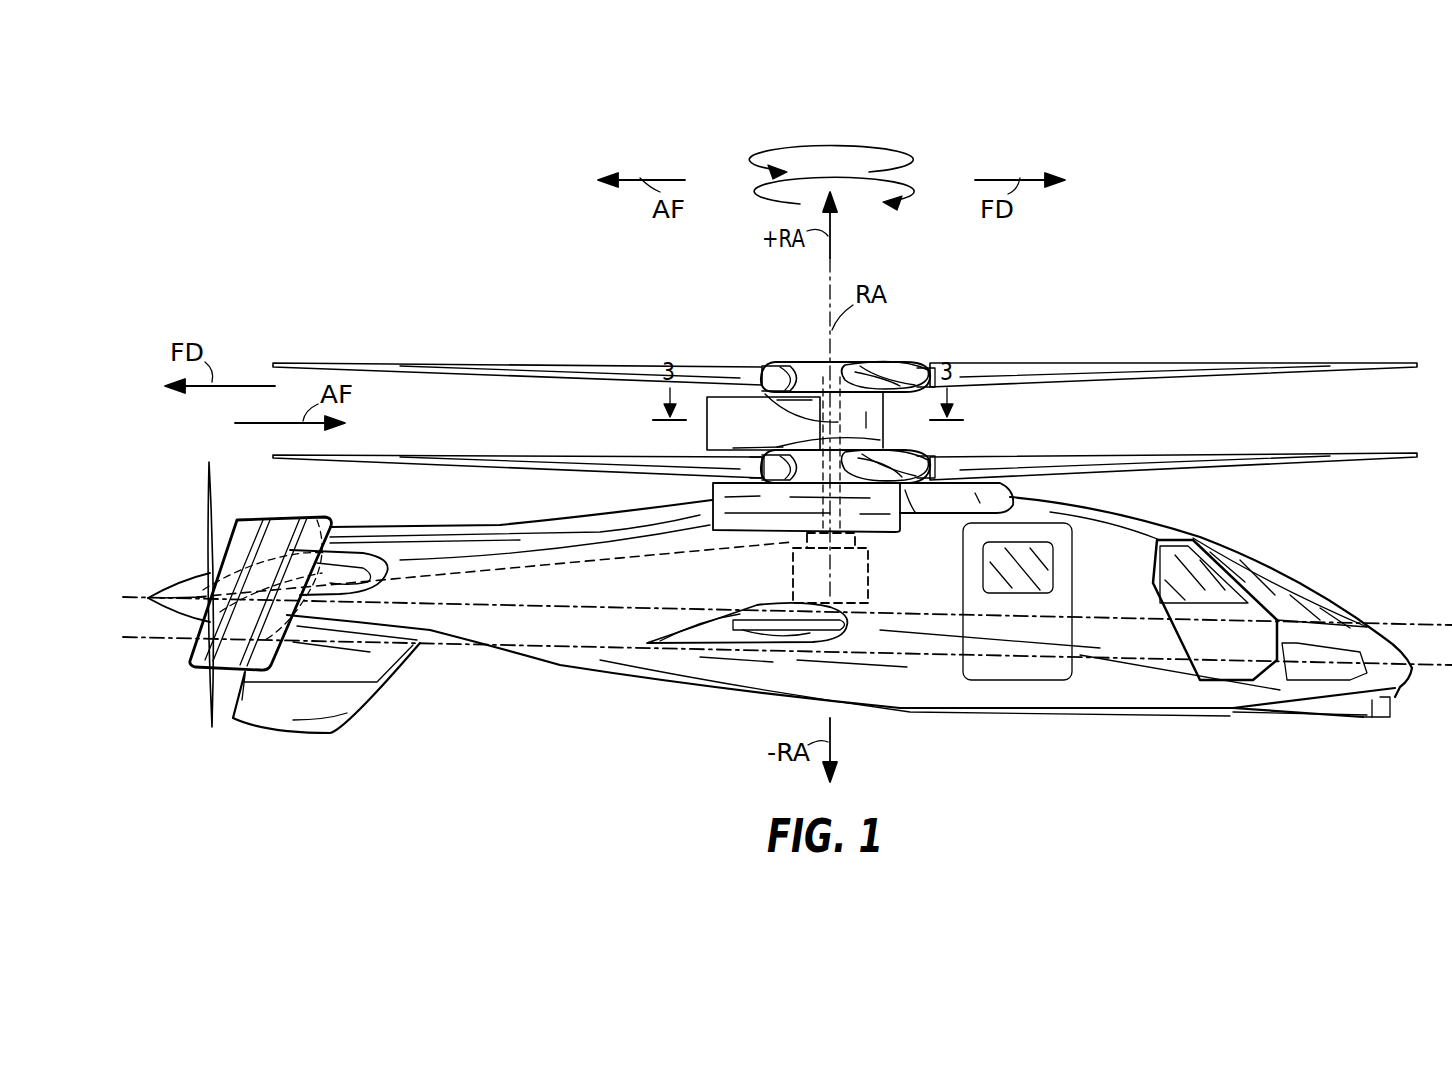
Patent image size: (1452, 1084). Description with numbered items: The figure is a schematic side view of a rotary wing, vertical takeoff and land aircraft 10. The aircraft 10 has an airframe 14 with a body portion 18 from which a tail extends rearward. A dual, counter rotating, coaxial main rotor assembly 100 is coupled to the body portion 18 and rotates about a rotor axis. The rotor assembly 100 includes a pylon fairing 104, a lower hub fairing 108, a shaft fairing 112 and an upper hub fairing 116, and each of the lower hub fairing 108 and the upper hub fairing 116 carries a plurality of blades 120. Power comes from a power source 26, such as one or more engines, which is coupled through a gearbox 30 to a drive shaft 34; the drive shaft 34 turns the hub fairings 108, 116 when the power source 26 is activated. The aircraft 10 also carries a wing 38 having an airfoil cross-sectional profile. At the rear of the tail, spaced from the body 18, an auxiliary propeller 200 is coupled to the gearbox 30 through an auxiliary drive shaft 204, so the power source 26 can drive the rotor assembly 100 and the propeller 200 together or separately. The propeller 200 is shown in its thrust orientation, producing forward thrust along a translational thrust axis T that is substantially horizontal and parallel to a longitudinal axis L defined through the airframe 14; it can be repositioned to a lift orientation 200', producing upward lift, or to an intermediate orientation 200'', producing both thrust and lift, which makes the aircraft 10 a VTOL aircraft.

The aircraft 10 is at (496, 210).
The airframe 14 is at (1057, 712).
The body portion 18 is at (523, 665).
The power source 26 is at (878, 548).
The gearbox 30 is at (905, 548).
The drive shaft 34 is at (768, 392).
The wing 38 is at (693, 628).
The main rotor assembly 100 is at (910, 325).
The pylon fairing 104 is at (712, 523).
The lower hub fairing 108 is at (895, 440).
The shaft fairing 112 is at (707, 440).
The upper hub fairing 116 is at (822, 352).
The blades 120 is at (410, 366).
The auxiliary propeller 200 is at (178, 591).
The auxiliary propeller in lift orientation 200' is at (231, 593).
The auxiliary propeller in intermediate orientation 200'' is at (268, 687).
The auxiliary drive shaft 204 is at (505, 565).
The translational thrust axis T is at (1428, 622).
The longitudinal axis L is at (1428, 662).